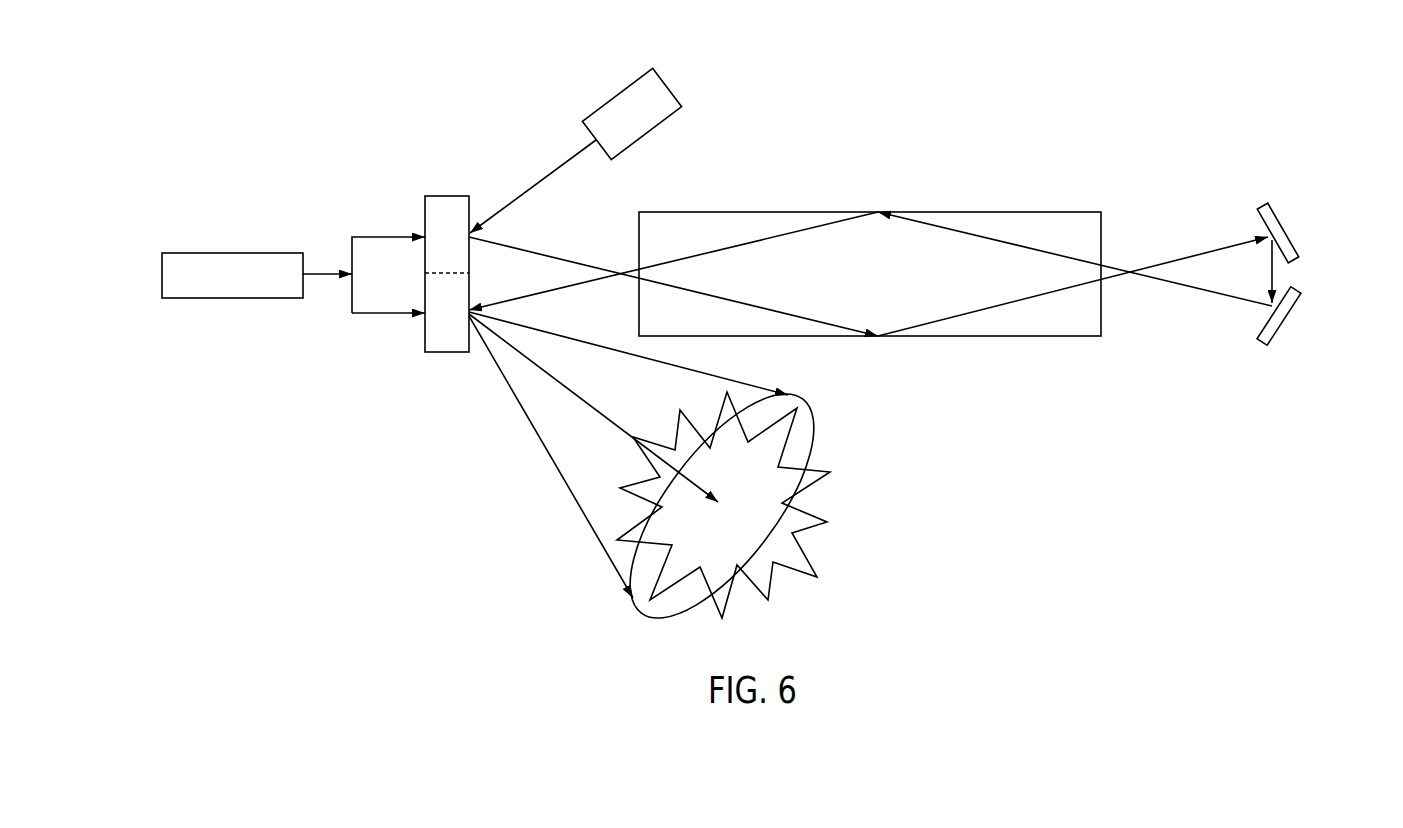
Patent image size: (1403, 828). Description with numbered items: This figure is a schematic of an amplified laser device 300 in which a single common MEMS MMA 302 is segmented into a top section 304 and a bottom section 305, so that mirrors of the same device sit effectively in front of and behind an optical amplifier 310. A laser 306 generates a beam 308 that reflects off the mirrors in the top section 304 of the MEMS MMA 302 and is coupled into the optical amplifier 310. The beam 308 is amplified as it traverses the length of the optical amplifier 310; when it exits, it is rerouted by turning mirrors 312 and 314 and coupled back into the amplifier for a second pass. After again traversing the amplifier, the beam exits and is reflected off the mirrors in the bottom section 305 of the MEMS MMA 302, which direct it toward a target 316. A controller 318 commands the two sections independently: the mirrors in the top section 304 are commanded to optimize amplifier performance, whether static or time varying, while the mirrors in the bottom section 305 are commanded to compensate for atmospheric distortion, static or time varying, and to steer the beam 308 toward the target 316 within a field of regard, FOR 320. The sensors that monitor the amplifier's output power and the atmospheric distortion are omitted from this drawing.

The laser device 300 is at (1170, 70).
The common MEMS MMA 302 is at (410, 258).
The top section 304 is at (425, 213).
The bottom section 305 is at (425, 291).
The laser 306 is at (620, 95).
The beam 308 is at (550, 170).
The optical amplifier 310 is at (1011, 212).
The turning mirror 312 is at (1287, 226).
The turning mirror 314 is at (1292, 322).
The target 316 is at (807, 553).
The controller 318 is at (232, 253).
The FOR 320 is at (813, 428).